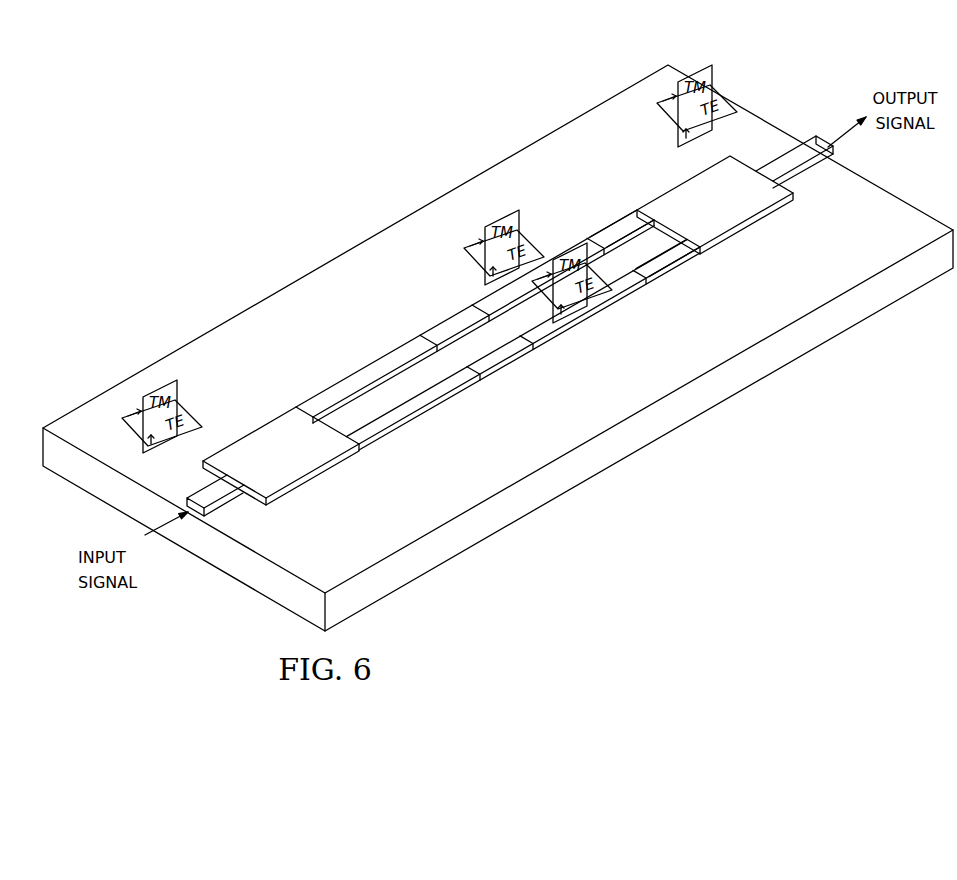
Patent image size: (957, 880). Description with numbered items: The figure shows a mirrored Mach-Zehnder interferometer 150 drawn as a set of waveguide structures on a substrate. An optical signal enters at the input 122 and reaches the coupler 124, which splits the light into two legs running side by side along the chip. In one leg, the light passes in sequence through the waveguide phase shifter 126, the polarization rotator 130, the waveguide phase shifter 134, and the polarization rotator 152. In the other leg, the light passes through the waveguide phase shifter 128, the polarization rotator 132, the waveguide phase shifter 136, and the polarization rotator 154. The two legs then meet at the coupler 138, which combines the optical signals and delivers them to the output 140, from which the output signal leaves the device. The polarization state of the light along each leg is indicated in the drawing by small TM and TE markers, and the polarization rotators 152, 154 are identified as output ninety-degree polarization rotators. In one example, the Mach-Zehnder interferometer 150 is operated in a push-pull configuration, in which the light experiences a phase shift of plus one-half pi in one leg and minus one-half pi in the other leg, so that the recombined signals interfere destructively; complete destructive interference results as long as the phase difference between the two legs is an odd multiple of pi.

The input 122 is at (222, 494).
The coupler 124 is at (250, 440).
The waveguide phase shifter 126 is at (362, 375).
The waveguide phase shifter 128 is at (428, 404).
The polarization rotator 130 is at (456, 323).
The polarization rotator 132 is at (510, 358).
The waveguide phase shifter 134 is at (582, 252).
The waveguide phase shifter 136 is at (630, 286).
The coupler 138 is at (676, 197).
The output 140 is at (803, 142).
The Mach-Zehnder interferometer 150 is at (193, 190).
The polarization rotator 152 is at (612, 232).
The polarization rotator 154 is at (672, 259).